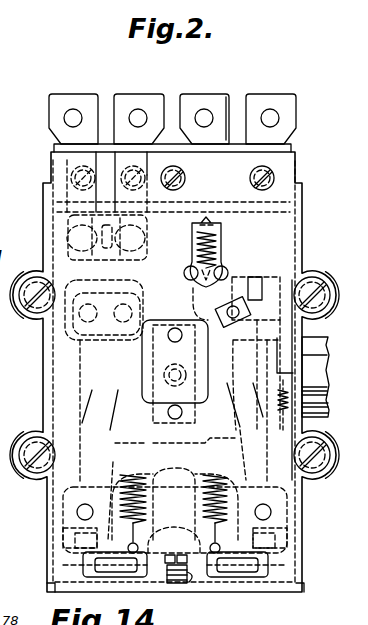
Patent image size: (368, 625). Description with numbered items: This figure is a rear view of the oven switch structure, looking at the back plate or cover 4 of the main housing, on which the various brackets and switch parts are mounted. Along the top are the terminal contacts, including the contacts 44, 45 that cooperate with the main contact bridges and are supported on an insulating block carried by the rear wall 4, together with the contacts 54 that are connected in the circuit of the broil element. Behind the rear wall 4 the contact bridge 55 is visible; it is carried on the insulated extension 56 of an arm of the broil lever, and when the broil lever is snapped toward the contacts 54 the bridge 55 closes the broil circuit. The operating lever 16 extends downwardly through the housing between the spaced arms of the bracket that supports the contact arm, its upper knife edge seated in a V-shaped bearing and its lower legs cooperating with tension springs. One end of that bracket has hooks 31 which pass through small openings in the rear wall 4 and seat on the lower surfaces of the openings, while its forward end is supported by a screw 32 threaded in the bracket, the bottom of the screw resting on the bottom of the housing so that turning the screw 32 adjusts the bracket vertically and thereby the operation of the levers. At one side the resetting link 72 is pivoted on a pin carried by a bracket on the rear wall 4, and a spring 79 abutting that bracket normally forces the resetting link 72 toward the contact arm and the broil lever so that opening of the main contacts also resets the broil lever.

The back plate or cover 4 is at (53, 397).
The contacts 54 is at (128, 102).
The contact 45 is at (196, 100).
The contact 44 is at (260, 100).
The insulated extension 56 is at (93, 255).
The contact bridge 55 is at (128, 261).
The operating lever 16 is at (153, 456).
The resetting link 72 is at (293, 373).
The spring 79 is at (293, 400).
The hooks 31 is at (123, 565).
The screw 32 is at (193, 590).